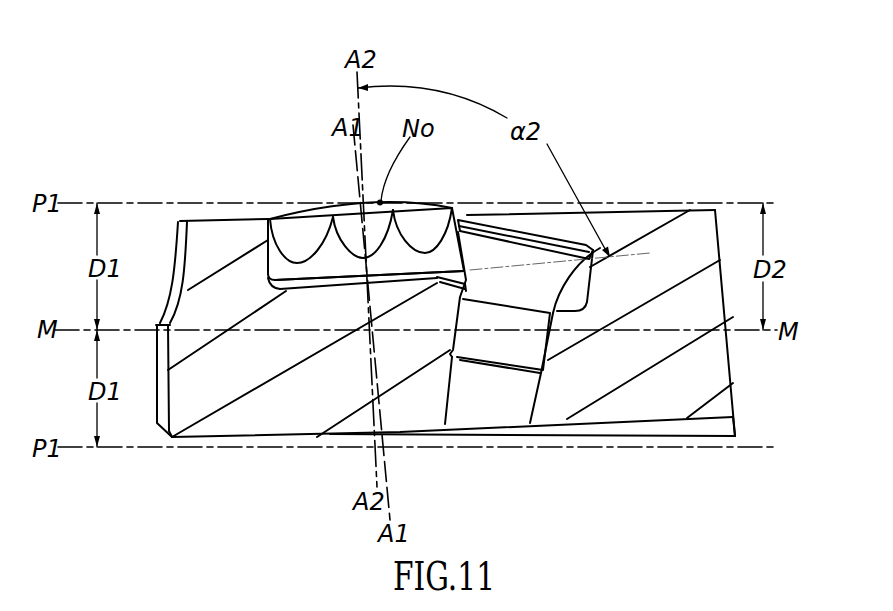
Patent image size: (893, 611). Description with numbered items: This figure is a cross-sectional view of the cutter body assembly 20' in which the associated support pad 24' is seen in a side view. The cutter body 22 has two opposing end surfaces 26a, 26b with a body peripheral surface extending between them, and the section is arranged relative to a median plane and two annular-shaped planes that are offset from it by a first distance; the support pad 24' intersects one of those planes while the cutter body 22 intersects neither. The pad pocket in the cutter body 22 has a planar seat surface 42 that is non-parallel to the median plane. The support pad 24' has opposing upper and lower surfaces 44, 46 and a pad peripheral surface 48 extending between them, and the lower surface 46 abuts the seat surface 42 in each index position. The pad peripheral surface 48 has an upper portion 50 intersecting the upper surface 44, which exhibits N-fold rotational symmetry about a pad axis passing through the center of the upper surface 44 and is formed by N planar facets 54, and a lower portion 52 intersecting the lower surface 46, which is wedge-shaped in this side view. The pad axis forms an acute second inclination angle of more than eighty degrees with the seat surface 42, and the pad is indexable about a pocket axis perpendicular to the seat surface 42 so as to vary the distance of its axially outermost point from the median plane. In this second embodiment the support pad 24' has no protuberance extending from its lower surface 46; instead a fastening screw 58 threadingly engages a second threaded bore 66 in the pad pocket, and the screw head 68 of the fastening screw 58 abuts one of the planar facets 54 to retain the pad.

The cutter body assembly 20' is at (200, 184).
The cutter body 22 is at (625, 367).
The support pad 24' is at (360, 199).
The end surface 26a is at (677, 203).
The end surface 26b is at (242, 437).
The seat surface 42 is at (396, 278).
The upper surface 44 is at (400, 217).
The lower surface 46 is at (342, 284).
The pad peripheral surface 48 is at (275, 267).
The upper portion 50 is at (285, 240).
The lower portion 52 is at (288, 288).
The planar facet 54 is at (293, 232).
The fastening screw 58 is at (522, 289).
The second threaded bore 66 is at (494, 399).
The screw head 68 is at (495, 254).